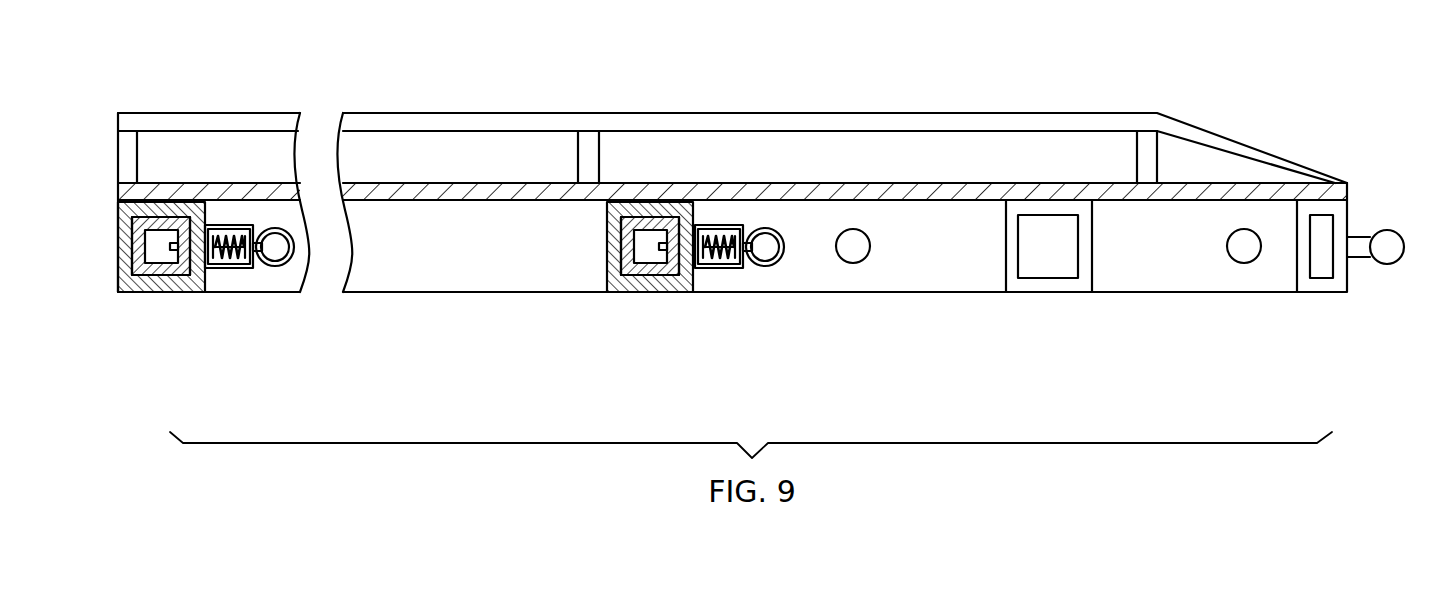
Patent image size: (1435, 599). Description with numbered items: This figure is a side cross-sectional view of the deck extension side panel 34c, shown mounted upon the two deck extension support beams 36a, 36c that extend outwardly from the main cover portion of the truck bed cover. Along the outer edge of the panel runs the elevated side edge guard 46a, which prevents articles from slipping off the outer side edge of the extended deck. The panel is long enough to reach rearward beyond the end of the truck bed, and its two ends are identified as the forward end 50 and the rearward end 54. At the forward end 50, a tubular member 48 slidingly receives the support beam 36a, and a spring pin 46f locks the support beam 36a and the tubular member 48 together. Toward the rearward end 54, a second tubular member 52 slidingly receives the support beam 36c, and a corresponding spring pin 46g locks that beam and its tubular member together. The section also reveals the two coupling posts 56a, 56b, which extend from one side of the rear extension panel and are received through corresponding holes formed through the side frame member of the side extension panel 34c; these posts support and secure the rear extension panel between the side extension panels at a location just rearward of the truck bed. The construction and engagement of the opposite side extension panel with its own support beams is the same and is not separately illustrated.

The forward end 50 is at (117, 188).
The deck extension side panel 34c is at (470, 190).
The elevated side edge guard 46a is at (688, 113).
The rearward end 54 is at (1349, 190).
The tubular member 48 is at (118, 280).
The deck extension support beam 36a is at (160, 275).
The spring pin 46f is at (240, 268).
The tubular member 52 is at (607, 282).
The deck extension support beam 36c is at (650, 275).
The spring pin 46g is at (730, 268).
The coupling post 56a is at (853, 263).
The coupling post 56b is at (1245, 263).